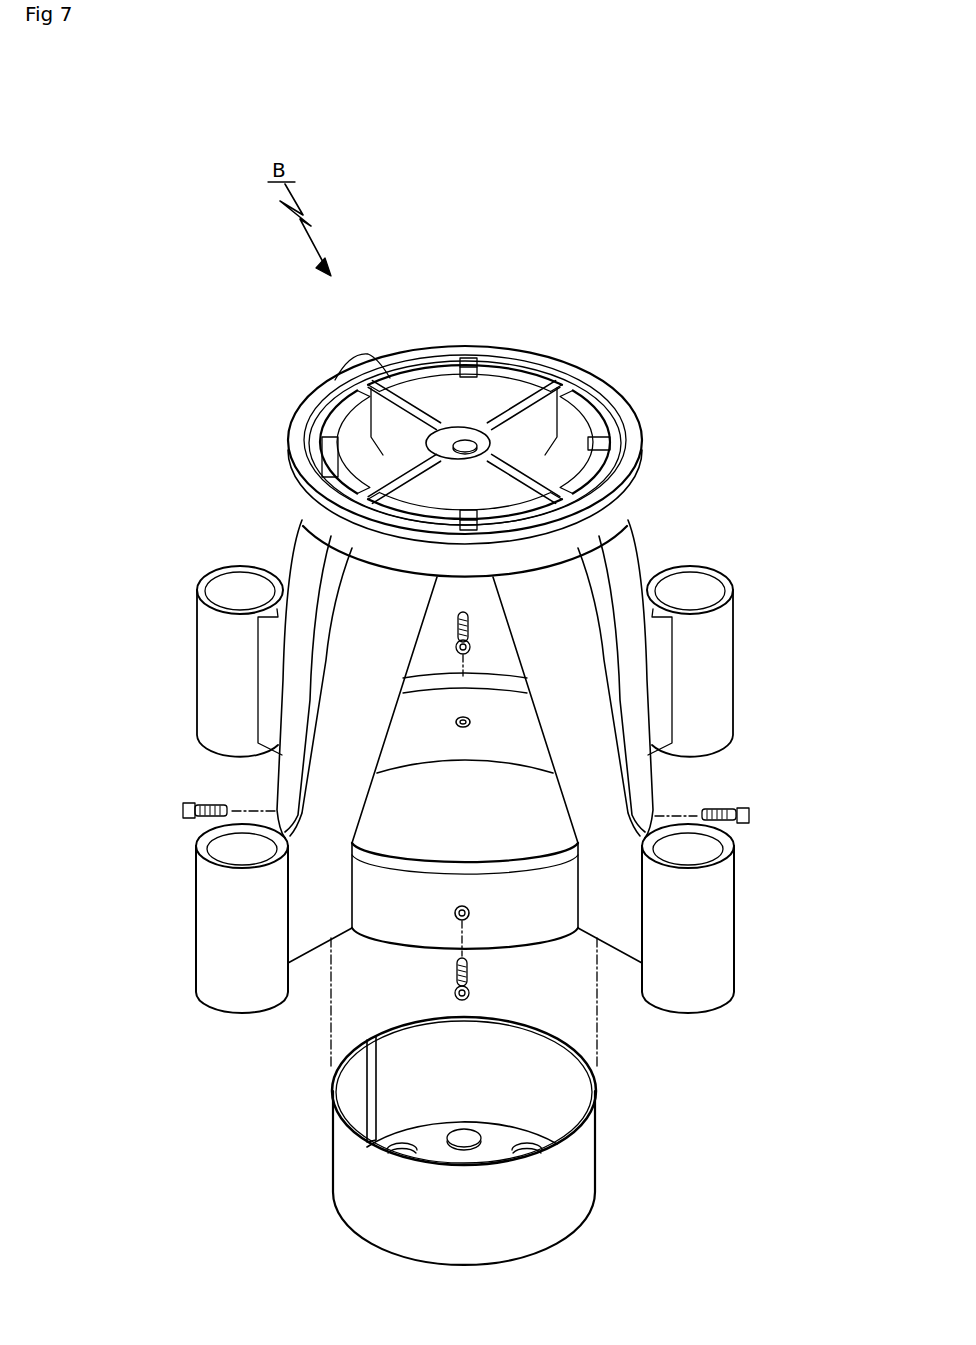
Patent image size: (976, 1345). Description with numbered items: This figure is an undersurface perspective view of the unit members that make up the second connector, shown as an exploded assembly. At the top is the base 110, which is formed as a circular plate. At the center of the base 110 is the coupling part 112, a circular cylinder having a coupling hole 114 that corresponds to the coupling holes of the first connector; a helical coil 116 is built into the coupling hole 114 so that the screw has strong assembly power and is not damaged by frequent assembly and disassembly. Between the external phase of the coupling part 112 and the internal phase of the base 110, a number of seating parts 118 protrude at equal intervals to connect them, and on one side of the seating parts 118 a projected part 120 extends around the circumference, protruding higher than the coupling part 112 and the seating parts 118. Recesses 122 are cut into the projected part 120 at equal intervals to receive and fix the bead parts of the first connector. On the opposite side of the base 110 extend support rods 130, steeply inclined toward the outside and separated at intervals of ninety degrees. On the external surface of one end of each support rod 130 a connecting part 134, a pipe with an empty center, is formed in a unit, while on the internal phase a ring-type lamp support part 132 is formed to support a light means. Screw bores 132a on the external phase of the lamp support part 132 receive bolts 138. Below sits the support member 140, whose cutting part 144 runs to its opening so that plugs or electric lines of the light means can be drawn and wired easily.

The base 110 is at (292, 481).
The coupling part 112 is at (482, 427).
The coupling hole 114 is at (443, 430).
The helical coil 116 is at (470, 436).
The seating parts 118 is at (604, 499).
The projected part 120 is at (587, 407).
The recesses 122 is at (333, 440).
The support rod 130 is at (597, 740).
The lamp support part 132 is at (397, 922).
The screw bores 132a is at (464, 730).
The connecting part 134 is at (718, 947).
The bolt 138 is at (183, 810).
The support member 140 is at (563, 1203).
The cutting part 144 is at (370, 1060).